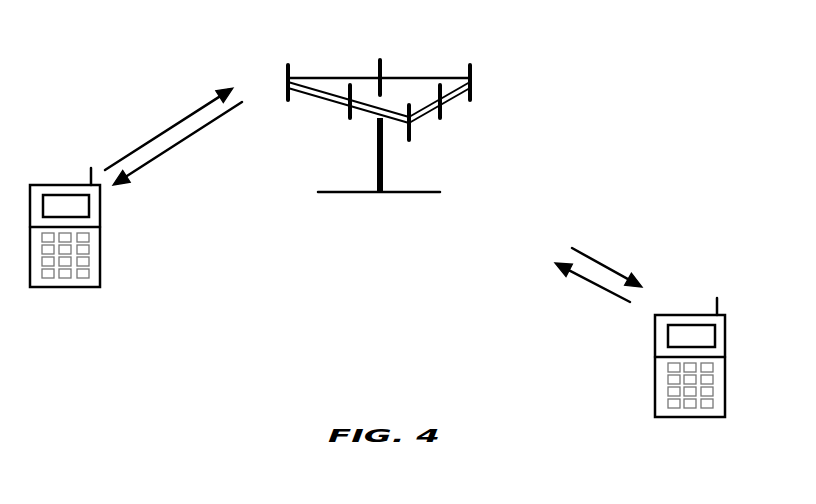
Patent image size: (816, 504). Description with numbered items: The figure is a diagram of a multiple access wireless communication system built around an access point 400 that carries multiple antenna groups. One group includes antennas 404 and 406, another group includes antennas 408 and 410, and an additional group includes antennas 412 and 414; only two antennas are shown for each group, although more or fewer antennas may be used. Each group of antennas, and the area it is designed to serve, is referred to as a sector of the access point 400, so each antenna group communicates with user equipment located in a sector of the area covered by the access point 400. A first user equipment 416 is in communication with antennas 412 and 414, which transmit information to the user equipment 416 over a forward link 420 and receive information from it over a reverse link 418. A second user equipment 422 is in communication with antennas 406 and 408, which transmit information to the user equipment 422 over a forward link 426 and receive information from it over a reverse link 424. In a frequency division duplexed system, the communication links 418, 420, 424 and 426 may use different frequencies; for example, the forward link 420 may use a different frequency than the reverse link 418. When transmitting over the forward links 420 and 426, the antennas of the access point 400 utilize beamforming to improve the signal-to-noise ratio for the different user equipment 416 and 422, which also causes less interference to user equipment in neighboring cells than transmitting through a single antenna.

The access point 400 is at (358, 192).
The antenna 404 is at (412, 135).
The antenna 406 is at (443, 118).
The antenna 408 is at (475, 92).
The antenna 410 is at (405, 40).
The antenna 412 is at (290, 78).
The antenna 414 is at (350, 120).
The user equipment 416 is at (74, 185).
The reverse link 418 is at (168, 128).
The forward link 420 is at (187, 142).
The user equipment 422 is at (672, 315).
The reverse link 424 is at (583, 280).
The forward link 426 is at (610, 263).